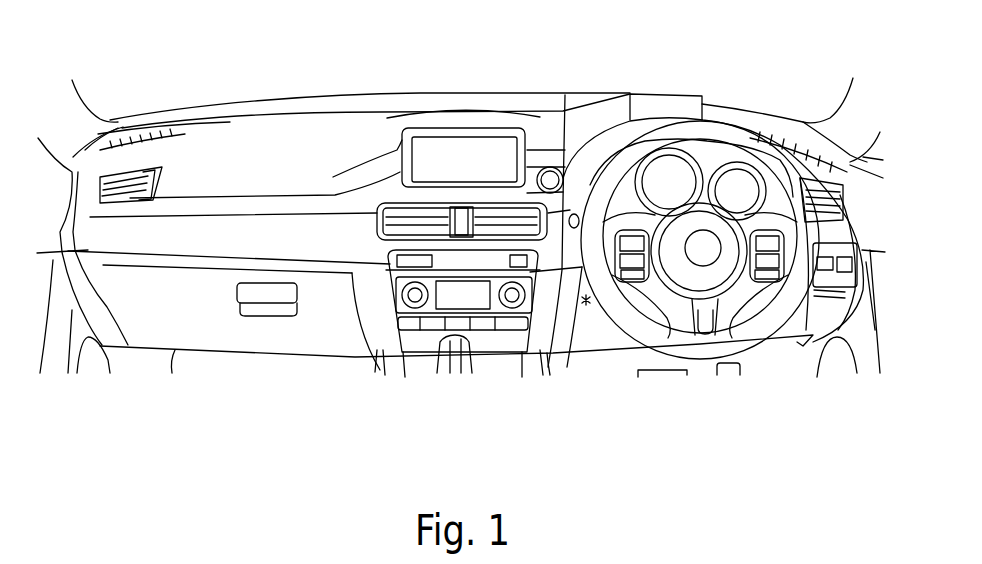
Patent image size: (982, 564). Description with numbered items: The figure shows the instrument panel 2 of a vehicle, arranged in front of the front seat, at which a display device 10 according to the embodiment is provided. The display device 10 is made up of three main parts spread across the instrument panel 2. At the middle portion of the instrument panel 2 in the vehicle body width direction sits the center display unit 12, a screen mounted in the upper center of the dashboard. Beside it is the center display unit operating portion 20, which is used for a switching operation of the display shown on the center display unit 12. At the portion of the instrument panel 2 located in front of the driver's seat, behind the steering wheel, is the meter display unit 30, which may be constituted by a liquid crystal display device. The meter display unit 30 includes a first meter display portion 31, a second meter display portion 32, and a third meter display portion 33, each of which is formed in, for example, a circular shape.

The instrument panel 2 is at (257, 133).
The display device 10 is at (503, 53).
The center display unit 12 is at (500, 147).
The center display unit operating portion 20 is at (553, 168).
The meter display unit 30 is at (696, 239).
The first meter display portion 31 is at (706, 300).
The second meter display portion 32 is at (626, 207).
The third meter display portion 33 is at (767, 280).